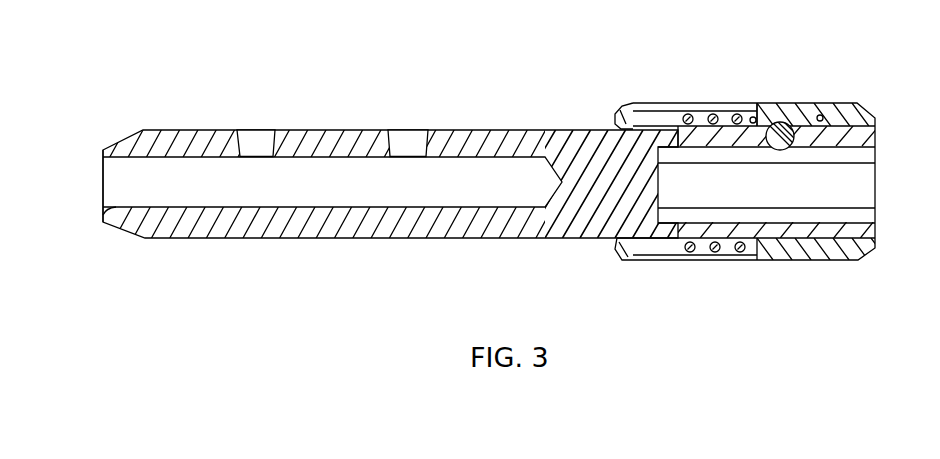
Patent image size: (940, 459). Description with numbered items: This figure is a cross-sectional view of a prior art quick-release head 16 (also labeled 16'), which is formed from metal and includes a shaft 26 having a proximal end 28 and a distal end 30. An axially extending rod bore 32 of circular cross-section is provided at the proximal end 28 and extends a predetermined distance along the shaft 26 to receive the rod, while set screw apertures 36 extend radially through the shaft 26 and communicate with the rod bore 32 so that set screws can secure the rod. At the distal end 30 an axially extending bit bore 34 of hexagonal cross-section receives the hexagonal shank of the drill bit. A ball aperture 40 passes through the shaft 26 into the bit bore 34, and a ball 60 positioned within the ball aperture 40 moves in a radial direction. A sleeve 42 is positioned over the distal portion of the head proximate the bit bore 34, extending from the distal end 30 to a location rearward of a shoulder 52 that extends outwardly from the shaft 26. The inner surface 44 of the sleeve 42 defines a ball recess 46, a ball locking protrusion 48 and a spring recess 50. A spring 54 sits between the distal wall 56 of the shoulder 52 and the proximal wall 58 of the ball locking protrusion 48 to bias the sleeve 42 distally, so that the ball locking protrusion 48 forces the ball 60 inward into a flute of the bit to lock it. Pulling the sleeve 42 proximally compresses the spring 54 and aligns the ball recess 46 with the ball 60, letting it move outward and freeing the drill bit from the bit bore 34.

The quick-release head 16 is at (390, 217).
The shaft assembly (alternate) 16' is at (390, 217).
The shaft 26 is at (508, 129).
The proximal end 28 is at (103, 151).
The distal end 30 is at (876, 240).
The rod bore 32 is at (113, 200).
The bit bore 34 is at (865, 150).
The set screw apertures 36 is at (252, 138).
The ball aperture 40 is at (803, 136).
The sleeve 42 is at (777, 107).
The inner surface 44 is at (782, 237).
The ball recess 46 is at (830, 107).
The ball locking protrusion 48 is at (760, 107).
The spring recess 50 is at (720, 108).
The shoulder 52 is at (634, 105).
The spring 54 is at (713, 252).
The distal wall 56 is at (684, 114).
The proximal wall 58 is at (749, 114).
The ball 60 is at (782, 151).